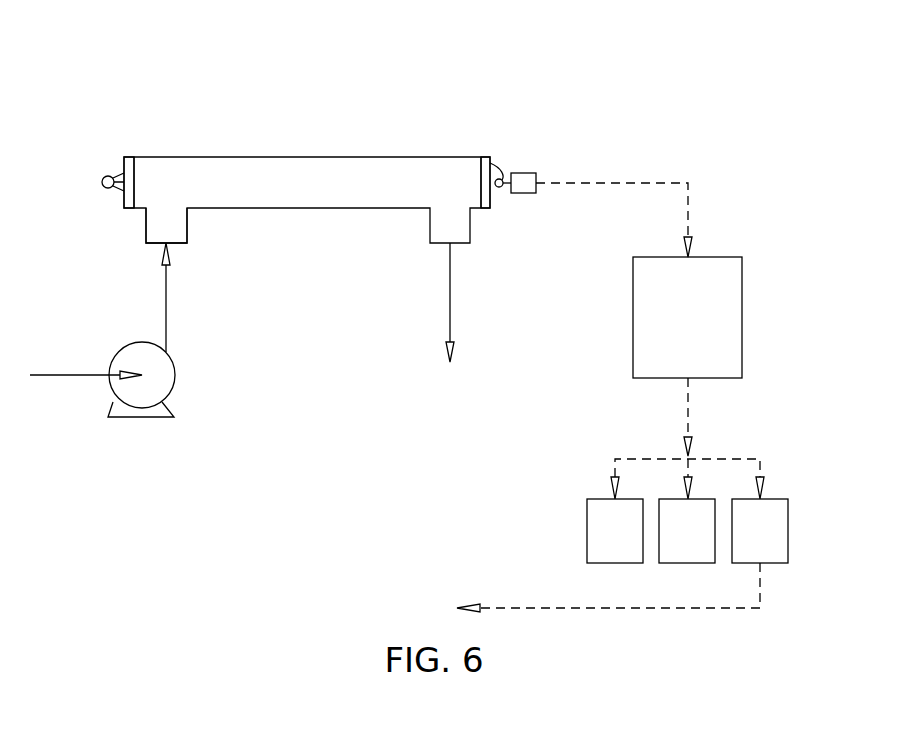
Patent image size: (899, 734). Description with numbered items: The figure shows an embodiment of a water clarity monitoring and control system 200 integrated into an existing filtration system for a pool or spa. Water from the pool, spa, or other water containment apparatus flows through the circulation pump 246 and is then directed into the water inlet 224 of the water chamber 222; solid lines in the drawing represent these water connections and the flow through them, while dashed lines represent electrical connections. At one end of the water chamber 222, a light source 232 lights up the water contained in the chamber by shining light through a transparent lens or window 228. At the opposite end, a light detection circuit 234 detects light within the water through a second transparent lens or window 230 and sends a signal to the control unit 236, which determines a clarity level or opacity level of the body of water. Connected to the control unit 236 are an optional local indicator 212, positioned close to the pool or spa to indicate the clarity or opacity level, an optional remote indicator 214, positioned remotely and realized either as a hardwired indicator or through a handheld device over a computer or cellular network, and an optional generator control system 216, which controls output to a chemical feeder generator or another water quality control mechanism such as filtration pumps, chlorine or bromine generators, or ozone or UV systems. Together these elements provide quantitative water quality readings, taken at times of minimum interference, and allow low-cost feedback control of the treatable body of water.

The water clarity monitoring and control system 200 is at (585, 86).
The water chamber 222 is at (292, 178).
The water inlet 224 is at (152, 228).
The transparent lens or window 228 is at (128, 157).
The transparent lens or window 230 is at (485, 157).
The light source 232 is at (103, 178).
The light detection circuit 234 is at (527, 173).
The control unit 236 is at (710, 307).
The local indicator 212 is at (603, 528).
The remote indicator 214 is at (687, 545).
The generator control system 216 is at (770, 533).
The circulation pump 246 is at (117, 387).